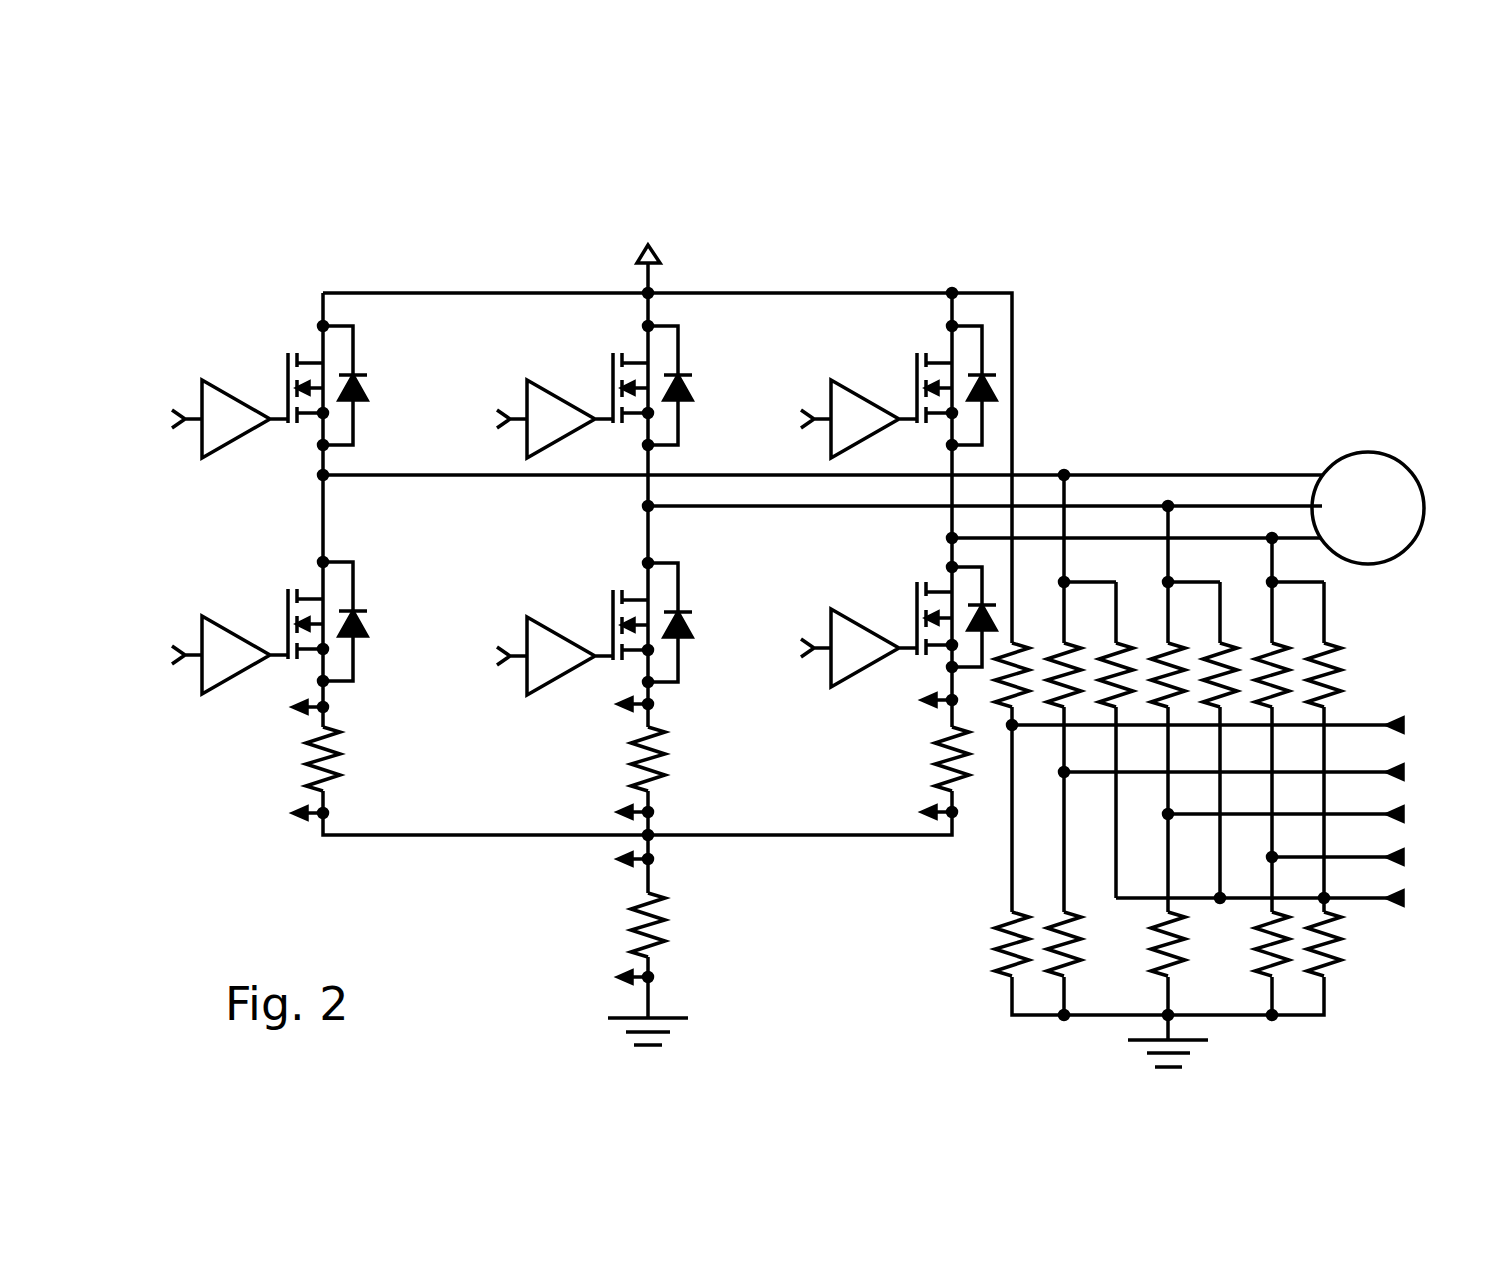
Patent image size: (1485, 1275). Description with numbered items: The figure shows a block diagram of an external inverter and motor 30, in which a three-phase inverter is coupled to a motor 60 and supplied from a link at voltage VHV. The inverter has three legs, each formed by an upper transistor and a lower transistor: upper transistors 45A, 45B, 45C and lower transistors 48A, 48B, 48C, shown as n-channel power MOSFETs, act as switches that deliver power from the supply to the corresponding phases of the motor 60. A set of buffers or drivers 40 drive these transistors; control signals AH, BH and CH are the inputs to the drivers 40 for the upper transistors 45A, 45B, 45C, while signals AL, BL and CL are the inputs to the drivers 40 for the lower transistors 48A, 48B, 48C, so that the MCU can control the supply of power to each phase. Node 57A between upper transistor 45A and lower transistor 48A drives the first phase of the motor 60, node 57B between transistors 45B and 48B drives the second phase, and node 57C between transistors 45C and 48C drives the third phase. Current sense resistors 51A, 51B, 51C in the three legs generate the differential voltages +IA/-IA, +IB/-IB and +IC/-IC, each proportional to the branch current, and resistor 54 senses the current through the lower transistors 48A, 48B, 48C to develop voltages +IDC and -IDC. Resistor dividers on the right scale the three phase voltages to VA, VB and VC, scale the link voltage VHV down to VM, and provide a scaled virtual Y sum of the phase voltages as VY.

The external inverter and motor 30 is at (1228, 278).
The drivers 40 is at (239, 385).
The upper transistor 45A is at (312, 354).
The upper transistor 45B is at (637, 354).
The upper transistor 45C is at (941, 354).
The lower transistor 48A is at (312, 590).
The lower transistor 48B is at (637, 591).
The lower transistor 48C is at (938, 585).
The current sense resistor 51A is at (336, 750).
The current sense resistor 51B is at (636, 749).
The current sense resistor 51C is at (940, 749).
The resistor 54 is at (636, 925).
The node 57A is at (1115, 473).
The node 57B is at (1232, 504).
The node 57C is at (1303, 542).
The motor 60 is at (1367, 453).